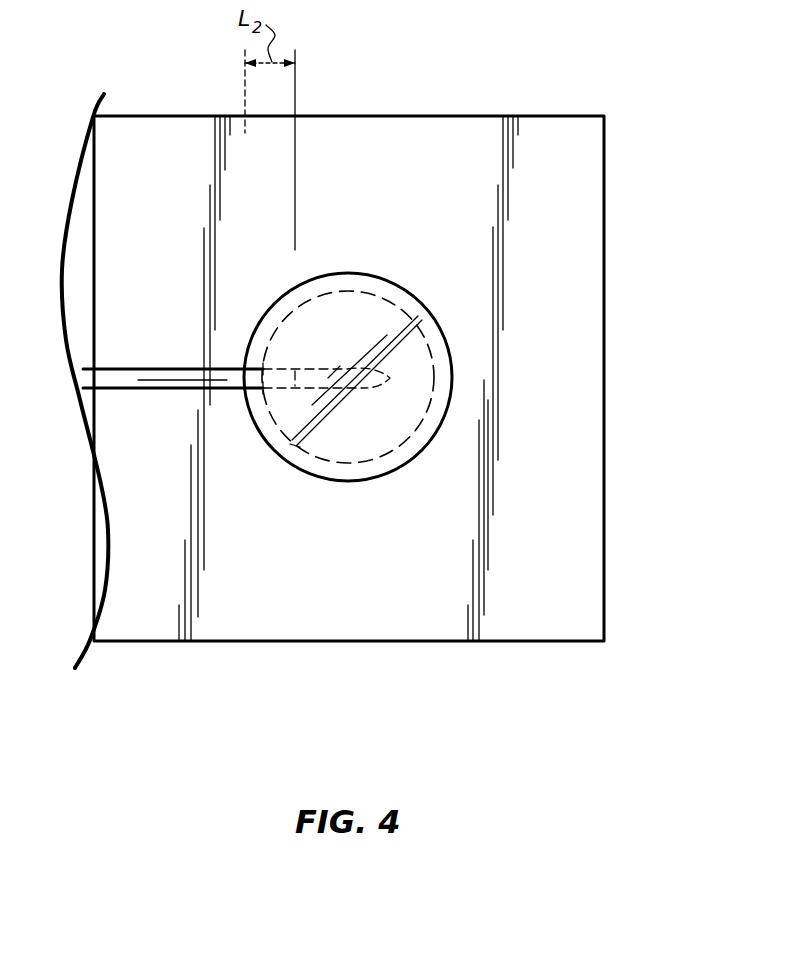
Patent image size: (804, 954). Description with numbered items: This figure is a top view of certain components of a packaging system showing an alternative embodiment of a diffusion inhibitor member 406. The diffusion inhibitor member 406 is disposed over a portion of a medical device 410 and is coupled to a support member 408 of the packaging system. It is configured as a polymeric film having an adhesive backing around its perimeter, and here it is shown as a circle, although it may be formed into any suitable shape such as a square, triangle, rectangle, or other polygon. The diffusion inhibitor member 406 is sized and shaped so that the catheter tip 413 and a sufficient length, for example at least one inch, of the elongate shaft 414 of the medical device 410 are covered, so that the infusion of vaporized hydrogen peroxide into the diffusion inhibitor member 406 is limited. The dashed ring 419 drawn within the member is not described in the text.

The diffusion inhibitor member 406 is at (452, 357).
The support member 408 is at (232, 602).
The medical device 410 is at (190, 370).
The catheter tip 413 is at (355, 390).
The elongate shaft 414 is at (145, 389).
The dashed inner ring / channel 419 is at (382, 458).